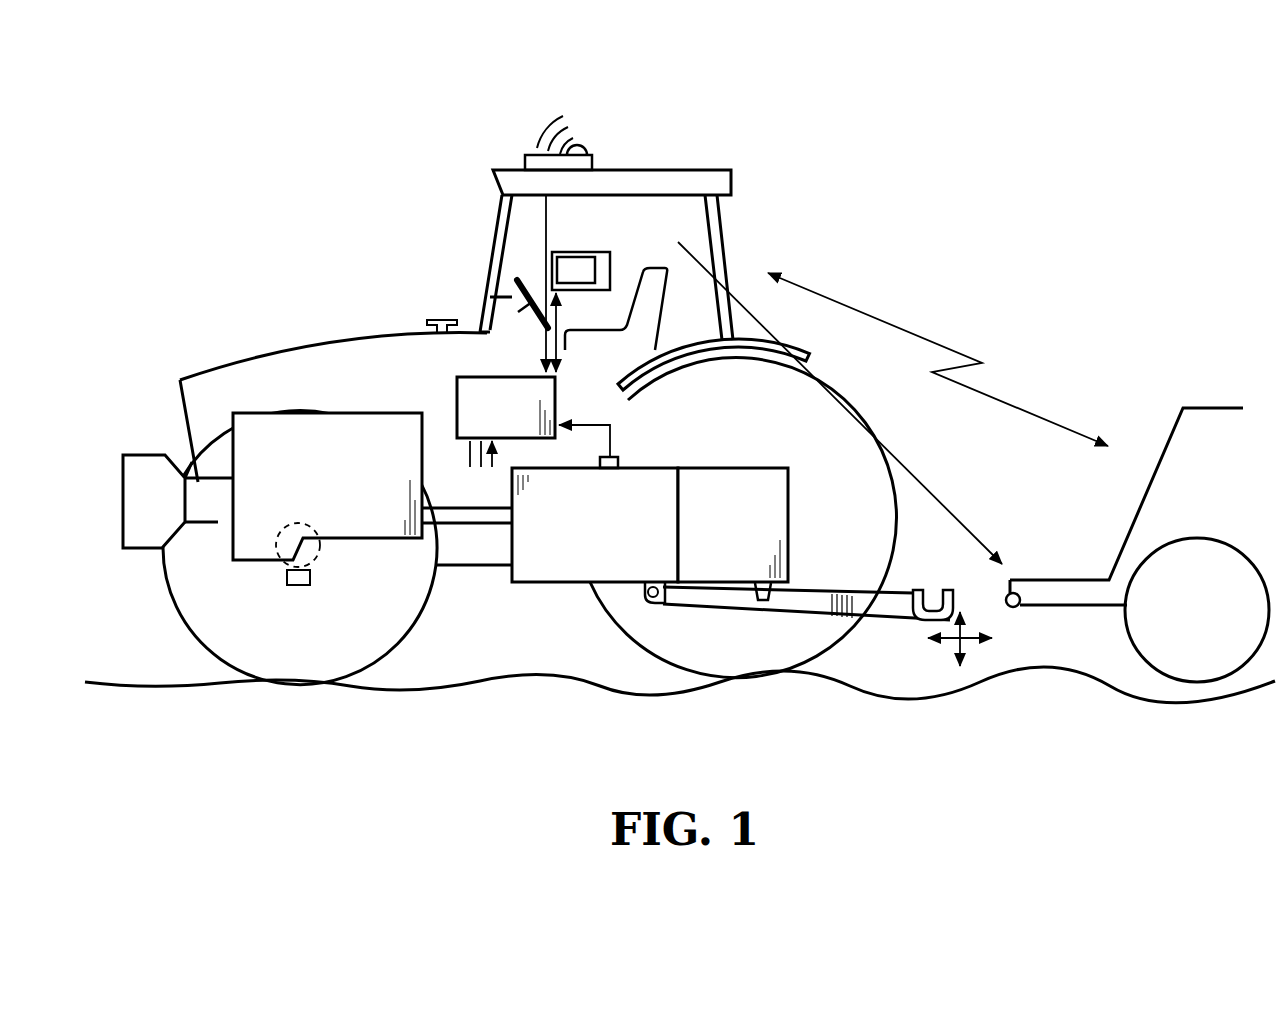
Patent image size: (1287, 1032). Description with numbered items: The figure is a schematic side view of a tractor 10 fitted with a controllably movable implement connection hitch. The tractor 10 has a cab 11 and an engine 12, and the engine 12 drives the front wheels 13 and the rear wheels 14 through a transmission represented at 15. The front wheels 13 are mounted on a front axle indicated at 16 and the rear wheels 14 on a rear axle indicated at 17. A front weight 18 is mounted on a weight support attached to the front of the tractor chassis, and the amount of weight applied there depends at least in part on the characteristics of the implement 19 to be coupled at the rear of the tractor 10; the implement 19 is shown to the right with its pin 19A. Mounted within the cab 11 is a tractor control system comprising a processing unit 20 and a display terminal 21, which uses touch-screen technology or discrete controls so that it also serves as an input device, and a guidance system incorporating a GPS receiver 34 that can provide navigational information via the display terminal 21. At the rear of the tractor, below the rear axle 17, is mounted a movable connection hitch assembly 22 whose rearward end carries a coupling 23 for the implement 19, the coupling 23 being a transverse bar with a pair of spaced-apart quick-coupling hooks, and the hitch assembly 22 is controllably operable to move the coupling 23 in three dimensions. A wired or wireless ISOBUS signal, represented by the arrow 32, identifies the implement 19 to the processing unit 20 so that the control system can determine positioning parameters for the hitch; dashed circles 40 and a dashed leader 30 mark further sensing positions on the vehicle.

The tractor 10 is at (252, 186).
The cab 11 is at (723, 223).
The engine 12 is at (270, 427).
The front wheels 13 is at (203, 605).
The rear wheels 14 is at (627, 613).
The transmission 15 is at (537, 560).
The front axle 16 is at (323, 557).
The rear axle 17 is at (712, 532).
The front weight 18 is at (142, 473).
The implement 19 is at (1226, 484).
The hitch pin 19A is at (1013, 607).
The processing unit 20 is at (462, 400).
The display terminal 21 is at (580, 265).
The connection hitch assembly 22 is at (797, 621).
The coupling 23 is at (913, 607).
The rear sensor 30 is at (917, 475).
The wired or wireless signal 32 is at (932, 340).
The GPS receiver 34 is at (525, 163).
The load sensor 40 is at (300, 577).